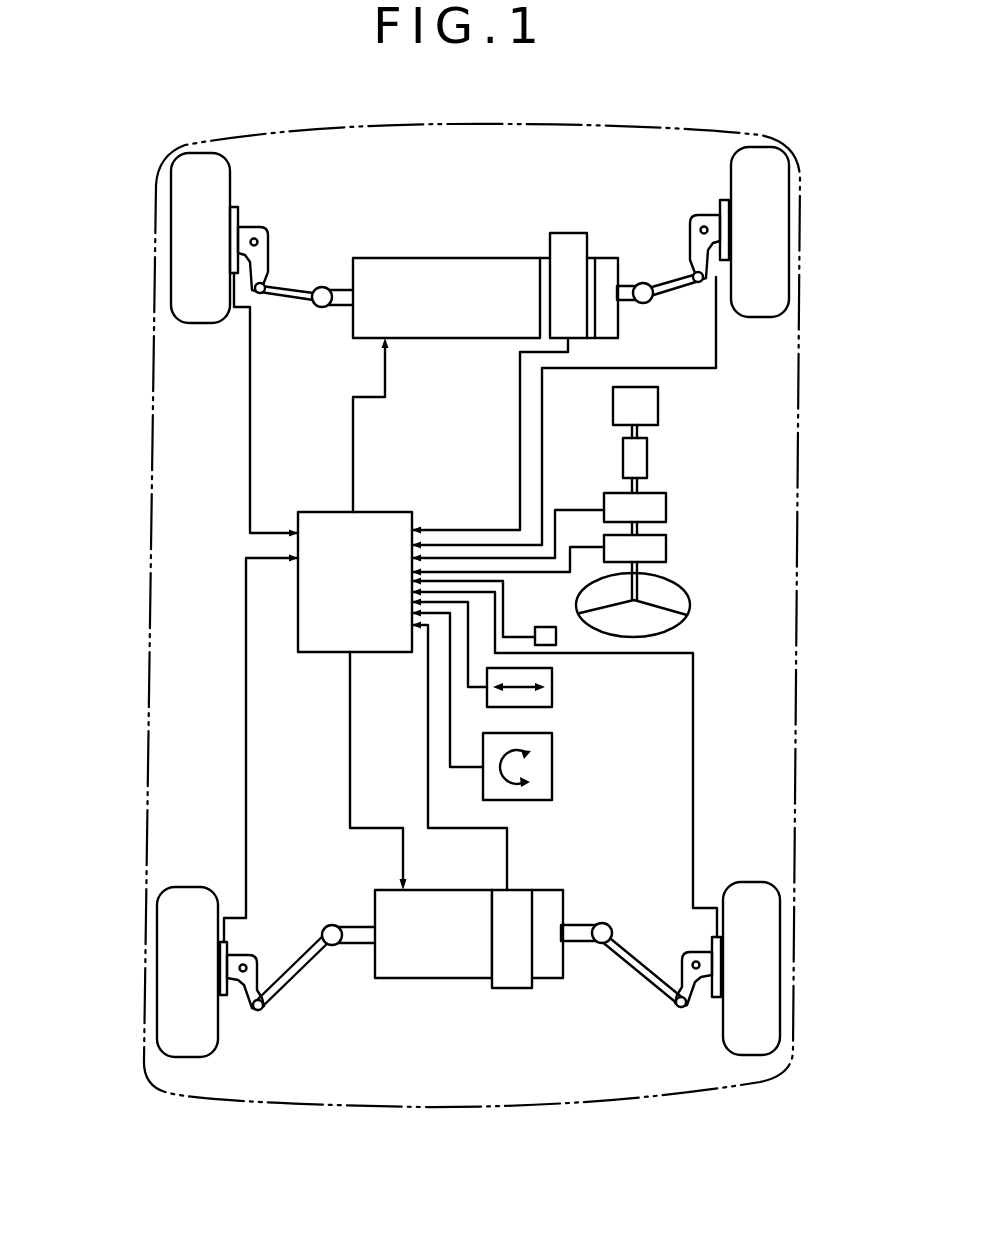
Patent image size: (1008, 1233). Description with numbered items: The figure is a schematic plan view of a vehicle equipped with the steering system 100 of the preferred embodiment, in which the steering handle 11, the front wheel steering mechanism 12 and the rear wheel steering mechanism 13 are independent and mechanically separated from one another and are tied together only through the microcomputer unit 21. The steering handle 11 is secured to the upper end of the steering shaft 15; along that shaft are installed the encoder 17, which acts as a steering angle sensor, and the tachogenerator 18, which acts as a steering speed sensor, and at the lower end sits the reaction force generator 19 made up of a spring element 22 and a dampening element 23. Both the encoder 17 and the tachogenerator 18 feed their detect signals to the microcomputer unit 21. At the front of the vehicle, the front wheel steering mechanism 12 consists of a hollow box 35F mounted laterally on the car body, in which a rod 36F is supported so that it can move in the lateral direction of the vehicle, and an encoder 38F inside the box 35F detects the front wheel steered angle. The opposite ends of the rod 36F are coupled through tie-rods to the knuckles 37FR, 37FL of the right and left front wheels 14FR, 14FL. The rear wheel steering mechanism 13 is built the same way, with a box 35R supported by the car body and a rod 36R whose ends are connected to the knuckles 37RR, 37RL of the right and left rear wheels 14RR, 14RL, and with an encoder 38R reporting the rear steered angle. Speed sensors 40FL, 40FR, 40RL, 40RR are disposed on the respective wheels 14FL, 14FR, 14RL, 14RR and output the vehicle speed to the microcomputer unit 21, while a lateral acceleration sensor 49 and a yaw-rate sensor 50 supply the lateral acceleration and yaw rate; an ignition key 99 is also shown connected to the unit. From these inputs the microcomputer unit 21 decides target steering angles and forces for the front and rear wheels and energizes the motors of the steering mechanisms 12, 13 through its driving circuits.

The steering system 100 is at (137, 527).
The steering handle 11 is at (692, 603).
The front wheel steering mechanism 12 is at (485, 284).
The rear wheel steering mechanism 13 is at (469, 982).
The left front wheel 14FL is at (173, 240).
The right front wheel 14FR is at (777, 207).
The left rear wheel 14RL is at (168, 968).
The right rear wheel 14RR is at (763, 953).
The steering shaft 15 is at (627, 568).
The encoder 17 is at (662, 547).
The tachogenerator 18 is at (662, 507).
The reaction force generator 19 is at (687, 505).
The microcomputer unit 21 is at (373, 512).
The spring element 22 is at (643, 460).
The dampening element 23 is at (653, 405).
The box 35F is at (463, 327).
The box 35R is at (458, 973).
The rod 36F is at (343, 300).
The rod 36R is at (582, 938).
The knuckle 37FL is at (268, 277).
The knuckle 37FR is at (710, 217).
The knuckle 37RL is at (268, 973).
The knuckle 37RR is at (693, 950).
The encoder 38F is at (567, 238).
The encoder 38R is at (512, 987).
The speed sensor 40FL is at (240, 235).
The speed sensor 40FR is at (730, 248).
The speed sensor 40RL is at (225, 998).
The speed sensor 40RR is at (718, 998).
The lateral acceleration sensor 49 is at (553, 692).
The yaw-rate sensor 50 is at (553, 775).
The ignition key 99 is at (557, 638).